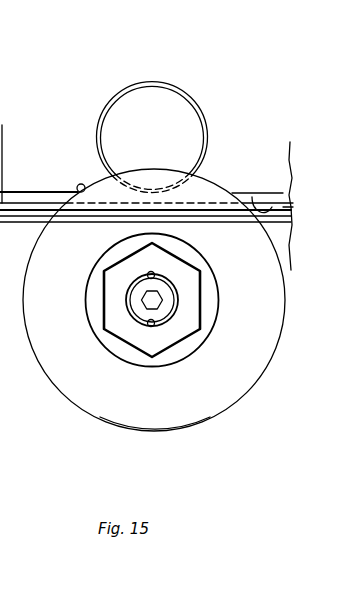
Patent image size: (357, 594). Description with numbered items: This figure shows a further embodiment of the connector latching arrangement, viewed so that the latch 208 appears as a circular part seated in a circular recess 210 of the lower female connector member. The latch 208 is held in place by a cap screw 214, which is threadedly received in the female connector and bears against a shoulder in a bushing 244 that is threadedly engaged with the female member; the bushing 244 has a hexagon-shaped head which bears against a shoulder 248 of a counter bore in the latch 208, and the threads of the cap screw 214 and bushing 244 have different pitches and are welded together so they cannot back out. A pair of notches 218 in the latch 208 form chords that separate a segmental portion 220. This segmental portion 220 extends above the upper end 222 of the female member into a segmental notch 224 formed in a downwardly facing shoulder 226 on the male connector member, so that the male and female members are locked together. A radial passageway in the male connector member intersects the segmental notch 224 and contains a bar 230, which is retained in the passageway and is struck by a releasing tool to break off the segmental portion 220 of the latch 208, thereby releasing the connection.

The latch 208 is at (95, 405).
The circular recess 210 is at (167, 428).
The cap screw 214 is at (135, 293).
The notches 218 is at (78, 219).
The segmental portion 220 is at (198, 185).
The upper end 222 is at (32, 192).
The segmental notch 224 is at (77, 186).
The downwardly facing shoulder 226 is at (252, 197).
The bar 230 is at (163, 97).
The bushing 244 is at (123, 325).
The shoulder 248 is at (177, 347).